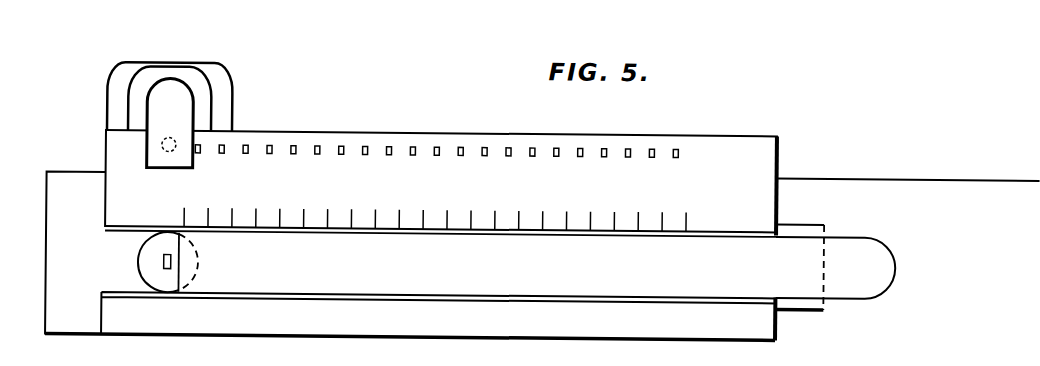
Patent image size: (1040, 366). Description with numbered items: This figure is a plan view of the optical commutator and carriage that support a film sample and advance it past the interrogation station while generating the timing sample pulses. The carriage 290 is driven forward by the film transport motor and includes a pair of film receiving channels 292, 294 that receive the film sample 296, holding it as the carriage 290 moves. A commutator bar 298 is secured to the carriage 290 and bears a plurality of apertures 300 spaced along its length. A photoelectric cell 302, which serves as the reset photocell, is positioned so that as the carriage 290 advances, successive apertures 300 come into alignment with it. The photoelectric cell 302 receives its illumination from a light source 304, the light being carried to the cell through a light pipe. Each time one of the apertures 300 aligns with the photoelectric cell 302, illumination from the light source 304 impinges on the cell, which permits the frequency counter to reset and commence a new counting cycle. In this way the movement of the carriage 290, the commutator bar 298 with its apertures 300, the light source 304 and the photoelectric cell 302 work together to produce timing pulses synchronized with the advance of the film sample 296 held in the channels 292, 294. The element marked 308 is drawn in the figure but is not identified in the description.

The carriage 290 is at (983, 170).
The film receiving channel 292 is at (683, 230).
The film receiving channel 294 is at (605, 291).
The film sample 296 is at (432, 276).
The commutator bar 298 is at (106, 151).
The apertures 300 is at (246, 143).
The photoelectric cell 302 is at (167, 152).
The light source 304 is at (165, 262).
The support 308 is at (449, 360).